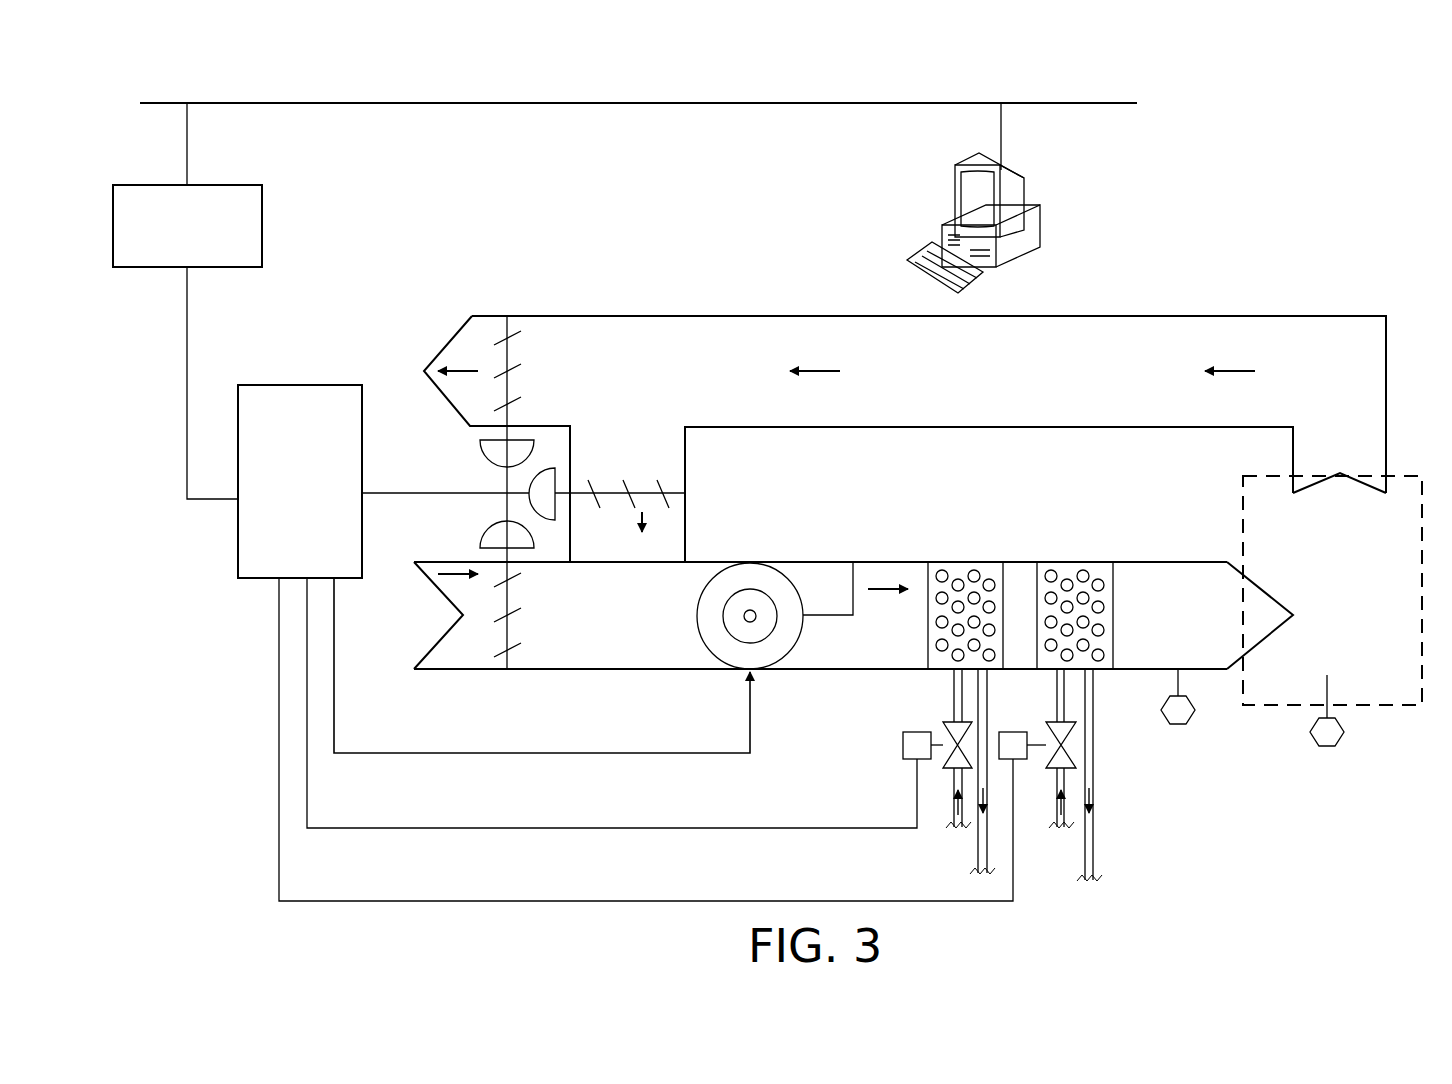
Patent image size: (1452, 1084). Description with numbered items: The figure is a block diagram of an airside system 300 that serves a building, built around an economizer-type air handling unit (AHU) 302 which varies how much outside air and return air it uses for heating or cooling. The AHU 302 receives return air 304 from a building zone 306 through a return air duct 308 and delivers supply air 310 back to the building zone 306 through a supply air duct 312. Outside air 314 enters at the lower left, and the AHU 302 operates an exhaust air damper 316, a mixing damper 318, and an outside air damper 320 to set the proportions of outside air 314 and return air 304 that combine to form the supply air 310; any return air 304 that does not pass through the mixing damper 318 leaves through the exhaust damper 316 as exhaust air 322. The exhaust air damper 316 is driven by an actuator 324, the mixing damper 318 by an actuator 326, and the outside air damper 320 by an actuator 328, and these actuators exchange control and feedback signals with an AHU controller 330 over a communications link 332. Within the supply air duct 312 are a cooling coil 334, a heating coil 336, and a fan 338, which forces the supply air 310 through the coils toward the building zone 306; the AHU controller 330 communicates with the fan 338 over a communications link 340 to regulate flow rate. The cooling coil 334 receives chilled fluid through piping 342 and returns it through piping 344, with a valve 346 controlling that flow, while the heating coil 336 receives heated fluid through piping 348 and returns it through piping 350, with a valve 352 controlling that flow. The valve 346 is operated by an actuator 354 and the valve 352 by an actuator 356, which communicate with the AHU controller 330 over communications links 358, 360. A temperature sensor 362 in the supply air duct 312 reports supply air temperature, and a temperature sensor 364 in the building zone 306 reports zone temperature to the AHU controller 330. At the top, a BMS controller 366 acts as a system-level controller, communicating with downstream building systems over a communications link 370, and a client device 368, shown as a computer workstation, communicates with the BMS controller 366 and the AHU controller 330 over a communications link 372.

The airside system 300 is at (545, 68).
The air handling unit 302 is at (1228, 200).
The return air 304 is at (1346, 393).
The building zone 306 is at (1397, 688).
The return air duct 308 is at (1243, 316).
The supply air 310 is at (1198, 580).
The supply air duct 312 is at (1147, 560).
The outside air 314 is at (398, 655).
The exhaust air damper 316 is at (512, 358).
The mixing damper 318 is at (688, 483).
The outside air damper 320 is at (512, 630).
The exhaust air 322 is at (400, 332).
The actuator 324 is at (528, 446).
The actuator 326 is at (556, 475).
The actuator 328 is at (482, 540).
The AHU controller 330 is at (274, 392).
The communications link 332 is at (414, 492).
The cooling coil 334 is at (950, 566).
The heating coil 336 is at (1059, 566).
The fan 338 is at (797, 636).
The communications link 340 is at (562, 752).
The piping 342 is at (953, 694).
The piping 344 is at (977, 855).
The valve 346 is at (944, 728).
The piping 348 is at (1056, 694).
The piping 350 is at (1095, 846).
The valve 352 is at (1047, 728).
The actuator 354 is at (910, 757).
The actuator 356 is at (1019, 752).
The communications link 358 is at (656, 827).
The communications link 360 is at (709, 900).
The temperature sensor 362 is at (1180, 728).
The temperature sensor 364 is at (1329, 750).
The BMS controller 366 is at (250, 226).
The client device 368 is at (1018, 193).
The communications link 370 is at (185, 432).
The communications link 372 is at (300, 104).